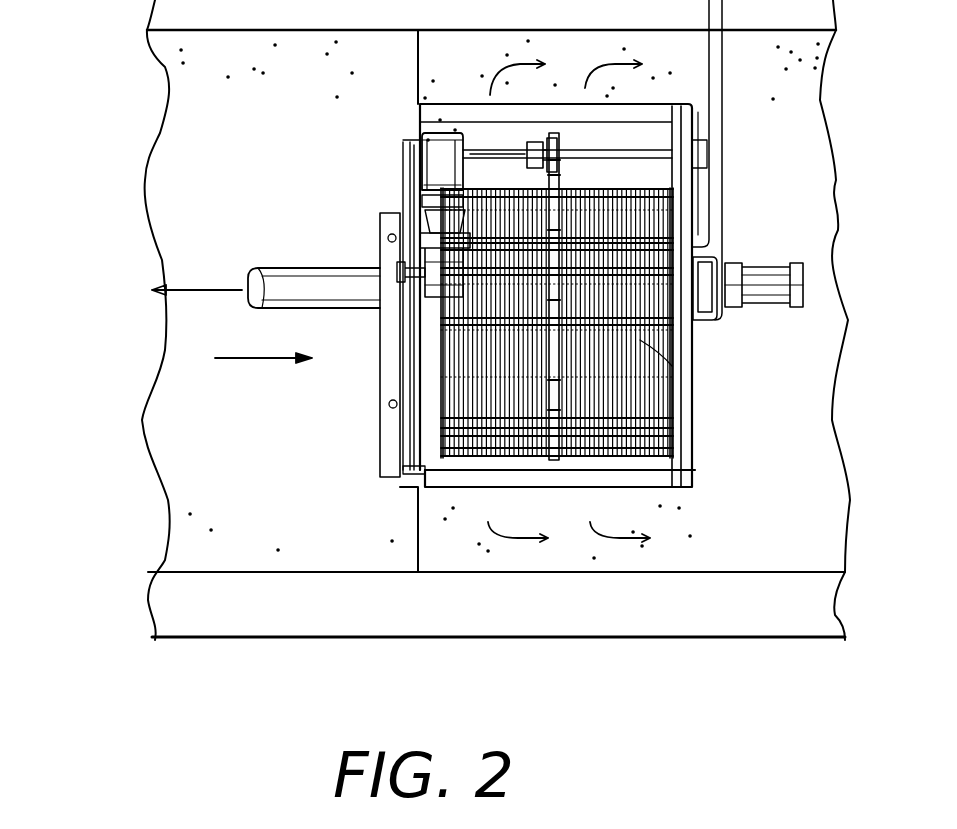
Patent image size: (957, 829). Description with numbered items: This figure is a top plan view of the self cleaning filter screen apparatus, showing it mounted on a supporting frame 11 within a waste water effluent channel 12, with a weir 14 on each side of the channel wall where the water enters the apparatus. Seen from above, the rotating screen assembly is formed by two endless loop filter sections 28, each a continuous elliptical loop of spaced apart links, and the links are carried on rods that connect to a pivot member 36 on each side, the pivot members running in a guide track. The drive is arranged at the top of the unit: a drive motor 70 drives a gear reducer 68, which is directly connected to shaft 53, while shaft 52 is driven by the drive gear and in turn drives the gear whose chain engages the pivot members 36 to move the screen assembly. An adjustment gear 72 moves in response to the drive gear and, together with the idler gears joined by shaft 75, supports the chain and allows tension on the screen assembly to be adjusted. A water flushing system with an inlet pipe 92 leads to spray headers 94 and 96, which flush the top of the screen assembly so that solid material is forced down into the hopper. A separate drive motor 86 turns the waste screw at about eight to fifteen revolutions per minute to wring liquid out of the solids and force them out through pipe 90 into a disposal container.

The supporting frame 11 is at (644, 108).
The waste water effluent channel 12 is at (167, 193).
The weir 14 is at (418, 68).
The endless loop filter section 28 is at (505, 458).
The pivot member 36 is at (545, 458).
The shaft 52 is at (695, 325).
The shaft 53 is at (412, 290).
The gear reducer 68 is at (420, 222).
The drive motor 70 is at (420, 128).
The adjustment gear 72 is at (526, 211).
The shaft 75 is at (487, 196).
The drive motor 86 is at (803, 300).
The pipe 90 is at (340, 308).
The inlet pipe 92 is at (722, 68).
The spray header 94 is at (672, 222).
The spray header 96 is at (672, 372).